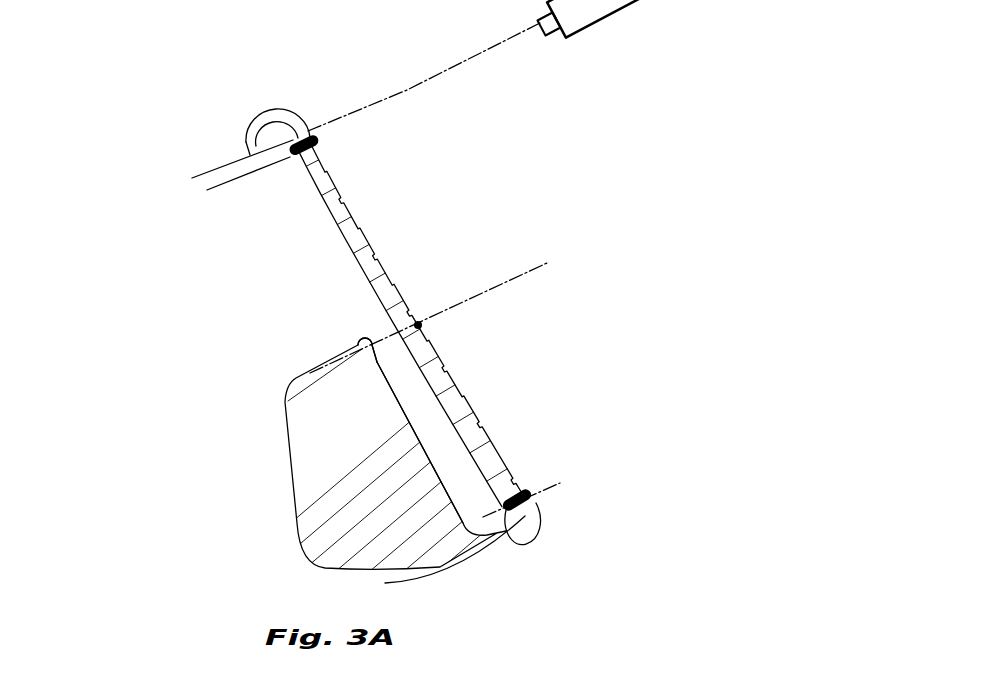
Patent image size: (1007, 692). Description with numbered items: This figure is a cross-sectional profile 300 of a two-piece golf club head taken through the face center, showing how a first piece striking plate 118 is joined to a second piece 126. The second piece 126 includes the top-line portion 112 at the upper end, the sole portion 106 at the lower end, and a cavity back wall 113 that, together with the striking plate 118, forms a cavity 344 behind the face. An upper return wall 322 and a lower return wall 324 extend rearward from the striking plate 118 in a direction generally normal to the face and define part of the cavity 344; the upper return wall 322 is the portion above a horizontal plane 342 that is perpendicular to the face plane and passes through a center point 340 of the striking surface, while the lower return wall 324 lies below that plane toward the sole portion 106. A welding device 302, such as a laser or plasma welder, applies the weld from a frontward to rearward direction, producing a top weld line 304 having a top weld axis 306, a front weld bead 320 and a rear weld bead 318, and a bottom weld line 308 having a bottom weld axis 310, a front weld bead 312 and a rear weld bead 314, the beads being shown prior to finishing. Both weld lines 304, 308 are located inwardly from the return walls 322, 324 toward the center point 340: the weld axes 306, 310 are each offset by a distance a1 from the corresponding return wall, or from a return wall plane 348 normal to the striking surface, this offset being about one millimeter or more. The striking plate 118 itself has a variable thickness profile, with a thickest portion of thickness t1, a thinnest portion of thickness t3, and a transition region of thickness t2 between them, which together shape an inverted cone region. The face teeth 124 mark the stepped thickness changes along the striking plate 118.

The cross-sectional profile 300 is at (95, 60).
The welding device 302 is at (593, 0).
The top-line portion 112 is at (401, 264).
The teeth 124 is at (481, 410).
The upper return wall 322 is at (247, 128).
The front weld bead 320 is at (310, 137).
The return wall plane 348 is at (247, 150).
The offset distance a1 is at (173, 148).
The top weld line 304 is at (313, 142).
The top weld axis 306 is at (318, 142).
The rear weld bead 318 is at (333, 215).
The thickness of thinnest portion t3 is at (356, 212).
The thickness of transition region t2 is at (356, 269).
The thickness of thickest portion t1 is at (368, 289).
The first piece striking plate 118 is at (406, 314).
The horizontal plane 342 is at (497, 287).
The center point 340 is at (424, 325).
The second piece 126 is at (316, 436).
The cavity back wall 113 is at (377, 355).
The cavity 344 is at (412, 420).
The lower return wall 324 is at (436, 557).
The sole portion 106 is at (497, 577).
The bottom weld line 308 is at (543, 500).
The rear weld bead 314 is at (508, 510).
The front weld bead 312 is at (533, 487).
The bottom weld axis 310 is at (556, 483).